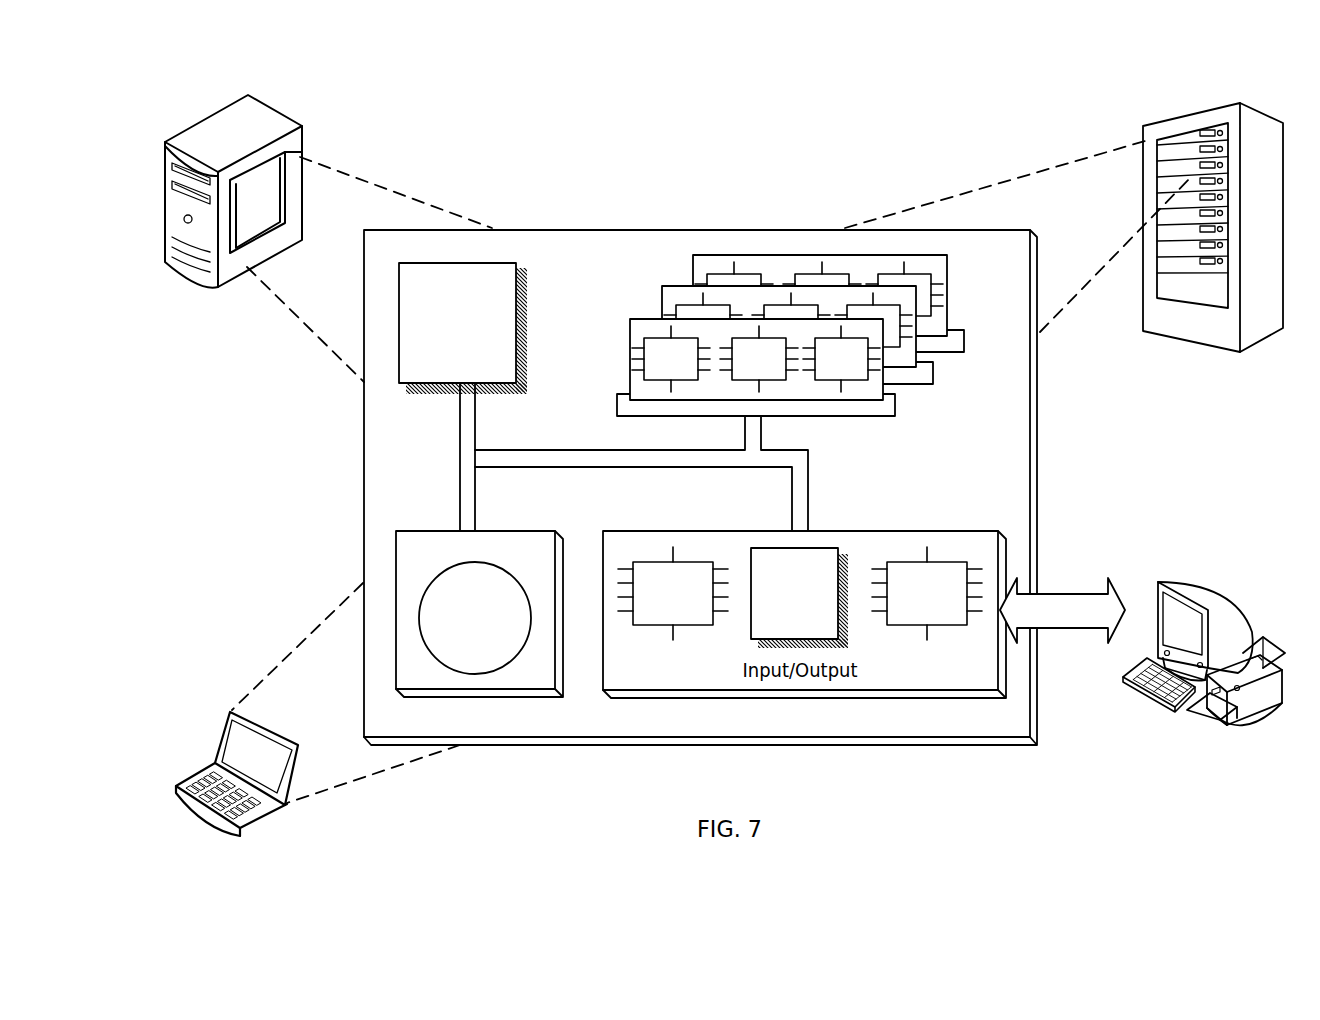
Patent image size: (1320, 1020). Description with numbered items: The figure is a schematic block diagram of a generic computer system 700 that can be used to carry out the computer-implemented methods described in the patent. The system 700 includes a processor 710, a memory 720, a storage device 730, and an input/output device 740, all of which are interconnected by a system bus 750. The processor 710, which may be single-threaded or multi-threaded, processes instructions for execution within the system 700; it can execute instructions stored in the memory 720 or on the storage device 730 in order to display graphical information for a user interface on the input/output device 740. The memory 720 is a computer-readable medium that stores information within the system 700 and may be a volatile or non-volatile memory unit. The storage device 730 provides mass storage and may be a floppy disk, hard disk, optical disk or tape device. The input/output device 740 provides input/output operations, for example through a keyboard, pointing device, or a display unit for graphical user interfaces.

The computer system 700 is at (164, 73).
The processor 710 is at (470, 372).
The memory 720 is at (953, 383).
The storage device 730 is at (517, 683).
The input/output device 740 is at (1162, 583).
The system bus 750 is at (625, 467).